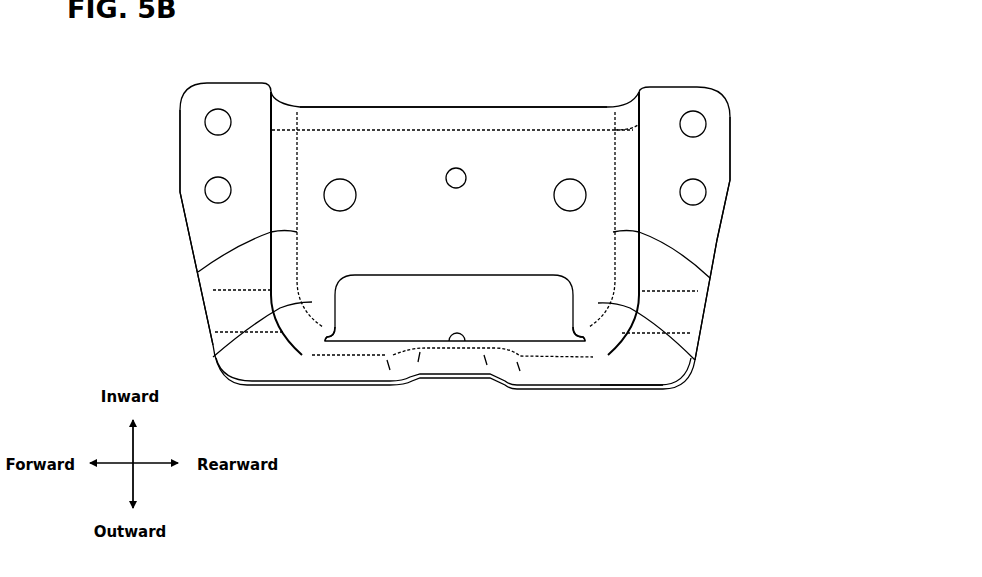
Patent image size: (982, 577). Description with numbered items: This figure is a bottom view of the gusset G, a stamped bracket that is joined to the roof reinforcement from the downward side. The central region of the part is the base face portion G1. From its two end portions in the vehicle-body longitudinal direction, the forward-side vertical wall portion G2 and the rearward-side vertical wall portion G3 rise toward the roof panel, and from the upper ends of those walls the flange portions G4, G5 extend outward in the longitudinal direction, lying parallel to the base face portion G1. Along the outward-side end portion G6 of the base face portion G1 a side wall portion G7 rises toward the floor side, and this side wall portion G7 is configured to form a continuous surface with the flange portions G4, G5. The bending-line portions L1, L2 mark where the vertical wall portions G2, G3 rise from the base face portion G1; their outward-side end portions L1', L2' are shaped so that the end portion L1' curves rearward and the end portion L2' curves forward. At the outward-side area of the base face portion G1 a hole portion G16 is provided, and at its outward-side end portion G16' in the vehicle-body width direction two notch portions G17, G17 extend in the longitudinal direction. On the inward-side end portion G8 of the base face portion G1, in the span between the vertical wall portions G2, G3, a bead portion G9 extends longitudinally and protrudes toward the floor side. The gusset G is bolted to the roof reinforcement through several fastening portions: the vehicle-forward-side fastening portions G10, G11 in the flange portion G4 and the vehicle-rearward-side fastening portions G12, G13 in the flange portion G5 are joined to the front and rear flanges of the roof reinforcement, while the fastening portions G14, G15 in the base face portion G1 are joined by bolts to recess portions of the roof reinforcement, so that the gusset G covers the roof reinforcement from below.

The gusset G is at (735, 80).
The base face portion G1 is at (517, 150).
The vertical wall portion G2 is at (271, 155).
The vertical wall portion G3 is at (640, 156).
The flange portion G4 is at (192, 157).
The flange portion G5 is at (720, 160).
The outward-side end portion G6 is at (533, 360).
The side wall portion G7 is at (613, 372).
The inward-side end portion G8 is at (400, 107).
The bead portion G9 is at (447, 120).
The fastening portion G10 is at (205, 192).
The fastening portion G11 is at (205, 120).
The fastening portion G12 is at (707, 192).
The fastening portion G13 is at (707, 122).
The fastening portion G14 is at (340, 179).
The fastening portion G15 is at (570, 179).
The hole portion G16 is at (455, 308).
The outward-side end portion of hole portion G16' is at (449, 389).
The notch portion G17 is at (332, 343).
The bending-line portion L1 is at (223, 263).
The outward-side end portion of bending-line portion L1' is at (231, 342).
The bending-line portion L2 is at (681, 264).
The outward-side end portion of bending-line portion L2' is at (674, 345).